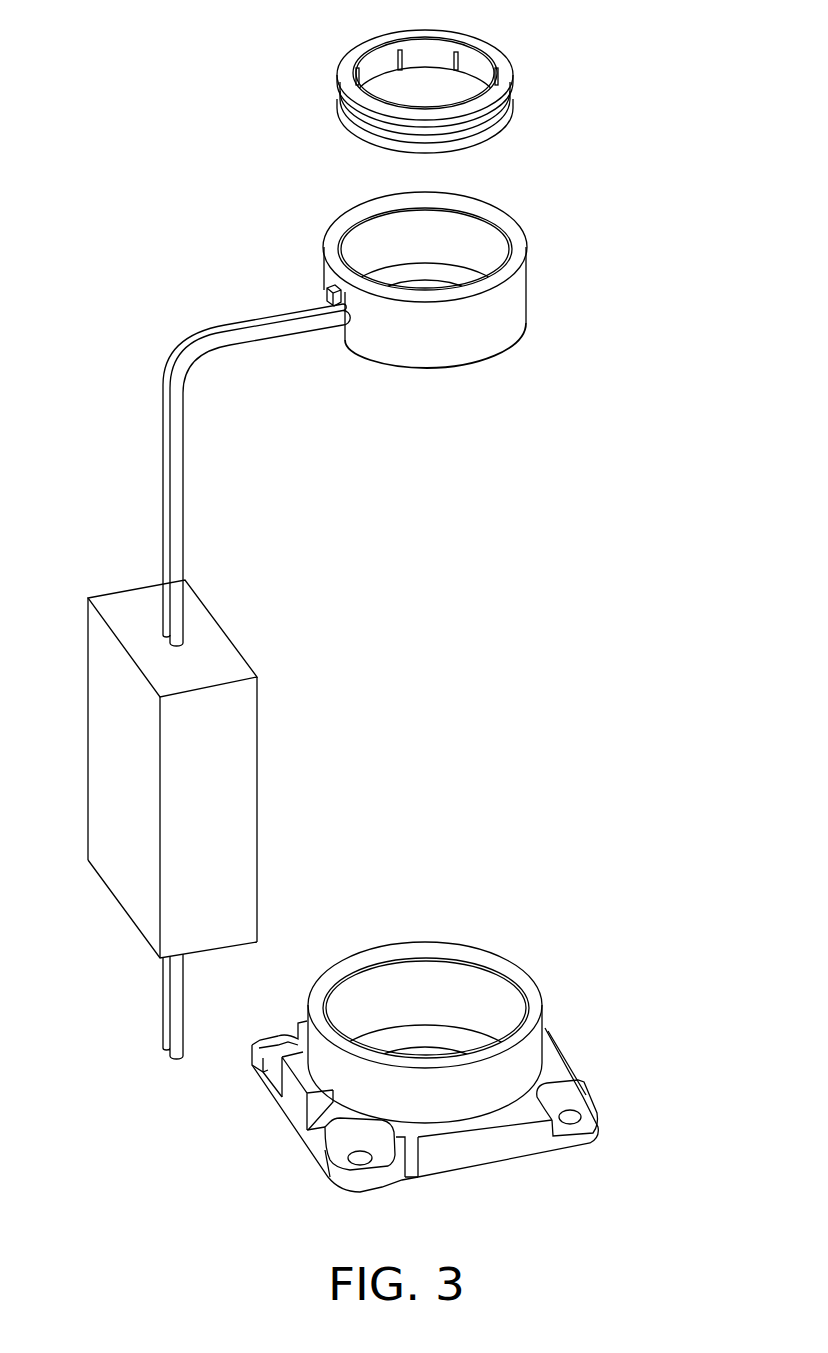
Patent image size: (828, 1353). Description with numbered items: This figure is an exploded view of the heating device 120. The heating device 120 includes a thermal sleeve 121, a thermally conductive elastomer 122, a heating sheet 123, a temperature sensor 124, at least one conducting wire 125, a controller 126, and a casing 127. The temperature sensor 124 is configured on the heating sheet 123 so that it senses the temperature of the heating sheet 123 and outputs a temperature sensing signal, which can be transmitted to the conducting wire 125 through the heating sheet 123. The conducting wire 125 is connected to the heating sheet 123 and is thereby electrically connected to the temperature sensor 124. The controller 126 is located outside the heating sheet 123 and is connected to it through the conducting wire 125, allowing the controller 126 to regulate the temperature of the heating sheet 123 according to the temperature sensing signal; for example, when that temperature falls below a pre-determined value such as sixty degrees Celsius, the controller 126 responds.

The heating device 120 is at (154, 88).
The thermal sleeve 121 is at (519, 235).
The thermally conductive elastomer 122 is at (512, 76).
The heating sheet 123 is at (518, 297).
The temperature sensor 124 is at (327, 292).
The conducting wire 125 is at (242, 330).
The controller 126 is at (237, 786).
The casing 127 is at (558, 1060).